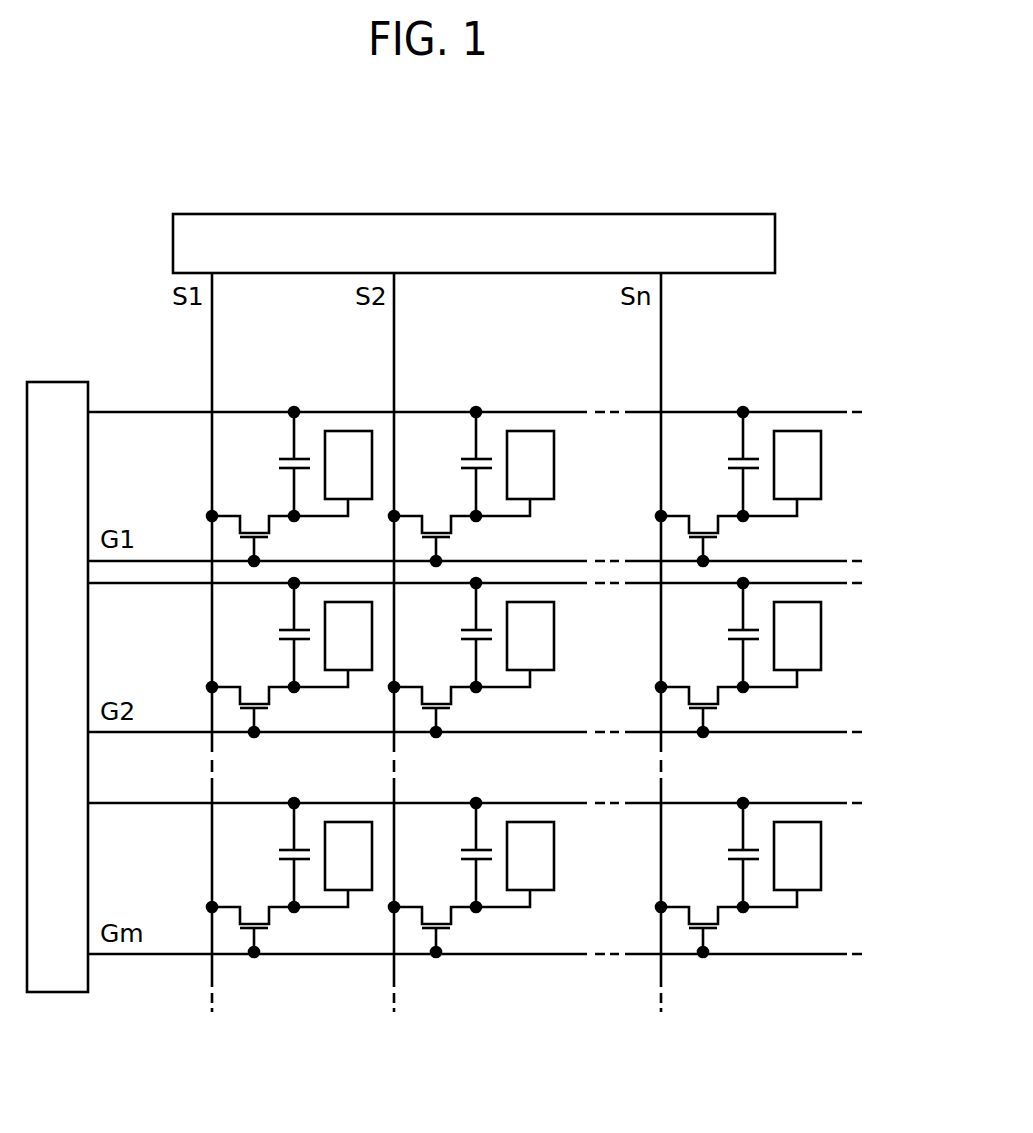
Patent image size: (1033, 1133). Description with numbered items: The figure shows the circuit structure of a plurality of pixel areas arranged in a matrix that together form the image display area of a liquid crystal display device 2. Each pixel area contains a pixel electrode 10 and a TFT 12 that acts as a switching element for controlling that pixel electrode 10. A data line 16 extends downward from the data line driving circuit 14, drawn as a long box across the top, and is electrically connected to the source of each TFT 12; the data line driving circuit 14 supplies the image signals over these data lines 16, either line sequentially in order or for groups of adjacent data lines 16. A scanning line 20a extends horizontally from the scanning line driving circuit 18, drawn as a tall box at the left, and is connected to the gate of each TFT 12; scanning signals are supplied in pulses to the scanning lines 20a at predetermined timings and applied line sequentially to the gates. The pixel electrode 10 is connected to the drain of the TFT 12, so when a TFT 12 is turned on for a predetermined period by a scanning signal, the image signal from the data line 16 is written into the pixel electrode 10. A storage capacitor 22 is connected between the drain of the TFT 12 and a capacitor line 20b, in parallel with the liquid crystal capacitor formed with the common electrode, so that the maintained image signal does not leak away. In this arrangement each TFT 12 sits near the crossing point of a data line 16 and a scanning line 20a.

The liquid crystal display device 2 is at (738, 150).
The pixel electrode 10 is at (350, 443).
The TFT 12 is at (266, 542).
The data line driving circuit 14 is at (178, 246).
The data line 16 is at (212, 395).
The scanning line driving circuit 18 is at (57, 388).
The scanning line 20a is at (190, 559).
The capacitor line 20b is at (197, 410).
The storage capacitor 22 is at (280, 463).